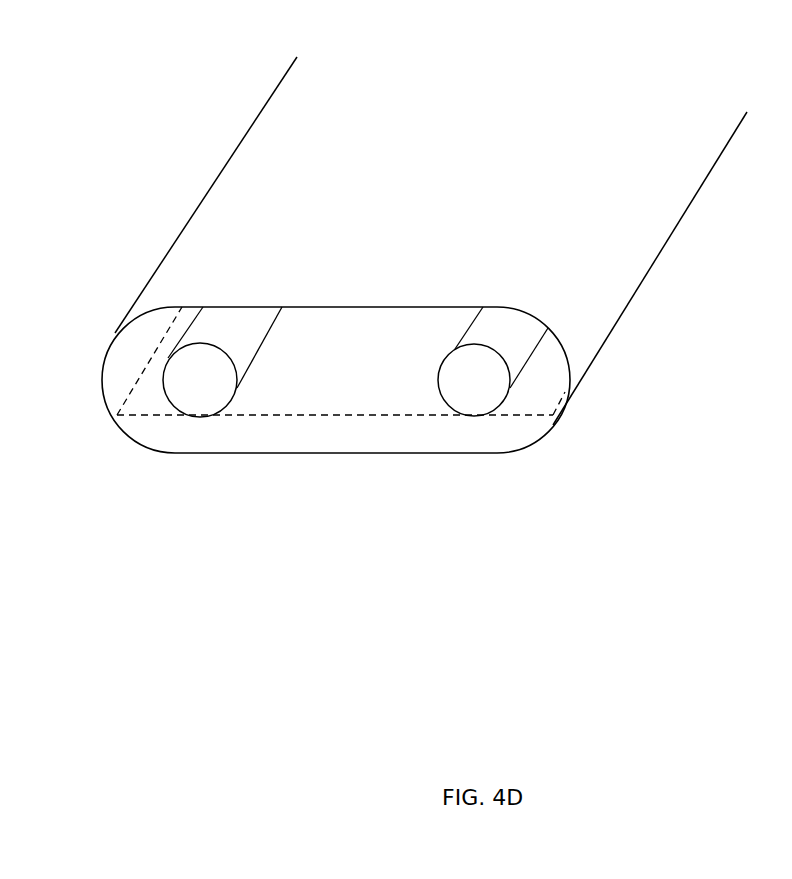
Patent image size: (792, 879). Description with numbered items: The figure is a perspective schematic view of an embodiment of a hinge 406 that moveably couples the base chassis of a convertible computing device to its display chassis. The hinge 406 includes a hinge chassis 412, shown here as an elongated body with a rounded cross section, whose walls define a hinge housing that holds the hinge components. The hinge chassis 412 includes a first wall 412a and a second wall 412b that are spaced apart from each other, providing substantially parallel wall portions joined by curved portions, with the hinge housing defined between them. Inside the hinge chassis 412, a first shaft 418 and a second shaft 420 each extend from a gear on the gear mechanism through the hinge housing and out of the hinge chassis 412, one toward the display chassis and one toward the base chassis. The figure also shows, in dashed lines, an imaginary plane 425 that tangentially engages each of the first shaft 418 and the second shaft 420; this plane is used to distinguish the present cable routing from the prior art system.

The hinge 406 is at (117, 116).
The hinge chassis 412 is at (558, 237).
The first wall 412a is at (333, 453).
The second wall 412b is at (333, 306).
The first shaft 418 is at (233, 328).
The second shaft 420 is at (505, 328).
The imaginary plane 425 is at (347, 400).